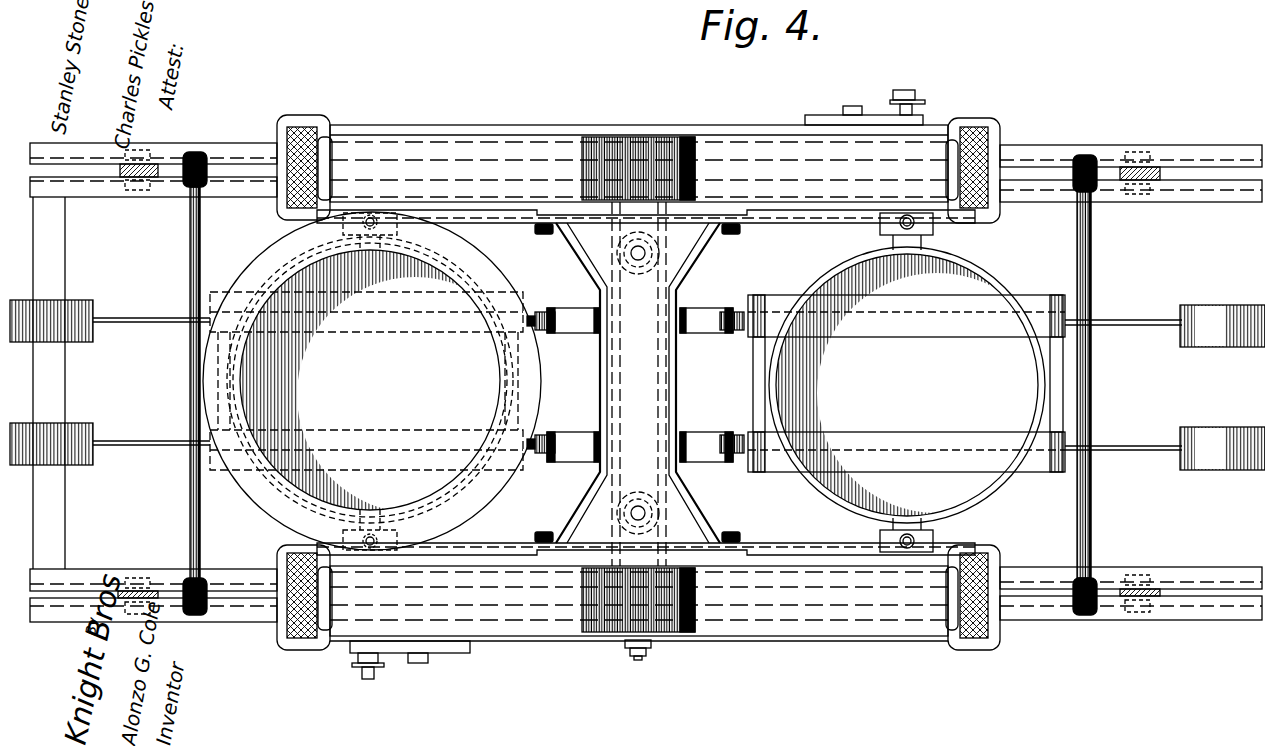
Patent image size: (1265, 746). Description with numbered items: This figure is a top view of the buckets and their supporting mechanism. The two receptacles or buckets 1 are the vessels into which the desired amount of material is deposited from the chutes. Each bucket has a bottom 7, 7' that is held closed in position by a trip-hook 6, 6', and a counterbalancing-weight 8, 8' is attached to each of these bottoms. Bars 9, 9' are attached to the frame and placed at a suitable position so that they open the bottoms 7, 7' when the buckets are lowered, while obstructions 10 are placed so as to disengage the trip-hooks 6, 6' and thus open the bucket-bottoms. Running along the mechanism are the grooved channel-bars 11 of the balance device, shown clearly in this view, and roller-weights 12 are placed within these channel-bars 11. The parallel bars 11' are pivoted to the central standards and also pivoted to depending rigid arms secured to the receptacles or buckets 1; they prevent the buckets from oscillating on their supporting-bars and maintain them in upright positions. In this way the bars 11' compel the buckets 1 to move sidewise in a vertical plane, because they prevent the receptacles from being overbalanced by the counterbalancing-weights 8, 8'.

The receptacle or bucket 1 is at (630, 382).
The trip-hook 6 is at (542, 364).
The trip-hook 6' is at (739, 361).
The bucket bottom 7 is at (151, 385).
The bucket bottom 7' is at (1123, 386).
The counterbalancing-weight 8 is at (51, 382).
The counterbalancing-weight 8' is at (1222, 373).
The bar 9 is at (185, 383).
The bar 9' is at (1098, 385).
The obstruction 10 is at (576, 334).
The grooved channel-bar 11 is at (639, 383).
The parallel bar 11' is at (646, 382).
The roller-weight 12 is at (638, 384).